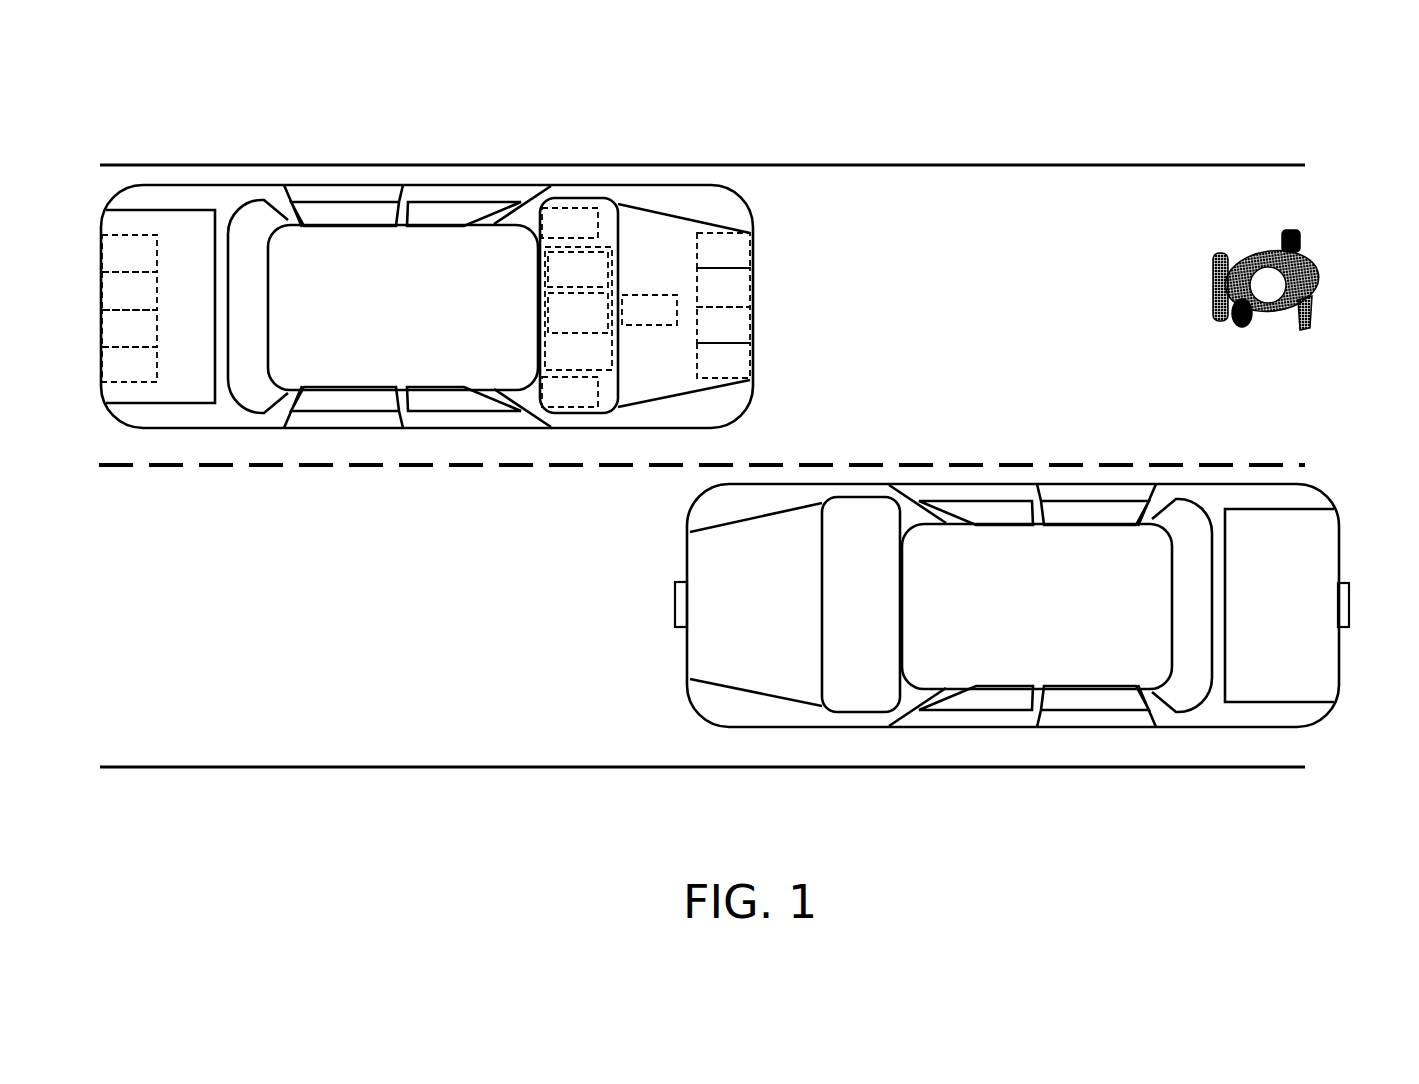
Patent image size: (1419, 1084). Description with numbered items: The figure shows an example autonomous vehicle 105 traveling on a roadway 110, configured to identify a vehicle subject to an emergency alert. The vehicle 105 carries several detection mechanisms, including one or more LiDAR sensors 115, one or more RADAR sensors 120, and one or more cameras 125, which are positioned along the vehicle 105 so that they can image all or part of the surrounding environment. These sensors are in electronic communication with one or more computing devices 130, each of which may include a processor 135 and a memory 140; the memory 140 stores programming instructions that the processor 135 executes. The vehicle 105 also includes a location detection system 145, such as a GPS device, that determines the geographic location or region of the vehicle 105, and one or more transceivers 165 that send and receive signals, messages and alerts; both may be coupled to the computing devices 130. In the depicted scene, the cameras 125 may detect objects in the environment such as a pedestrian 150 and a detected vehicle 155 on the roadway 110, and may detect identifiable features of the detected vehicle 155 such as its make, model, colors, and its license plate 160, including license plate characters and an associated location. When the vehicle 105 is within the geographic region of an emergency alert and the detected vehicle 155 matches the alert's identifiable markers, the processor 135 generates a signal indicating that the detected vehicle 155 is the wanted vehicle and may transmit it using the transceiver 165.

The autonomous vehicle 105 is at (598, 184).
The roadway 110 is at (823, 210).
The LiDAR sensor 115 is at (113, 301).
The RADAR sensor 120 is at (113, 338).
The camera 125 is at (113, 264).
The computing device 130 is at (561, 361).
The processor 135 is at (561, 279).
The memory 140 is at (561, 323).
The location detection system 145 is at (553, 233).
The pedestrian 150 is at (1220, 278).
The detected vehicle 155 is at (687, 533).
The license plate 160 is at (672, 604).
The transceiver 165 is at (632, 320).